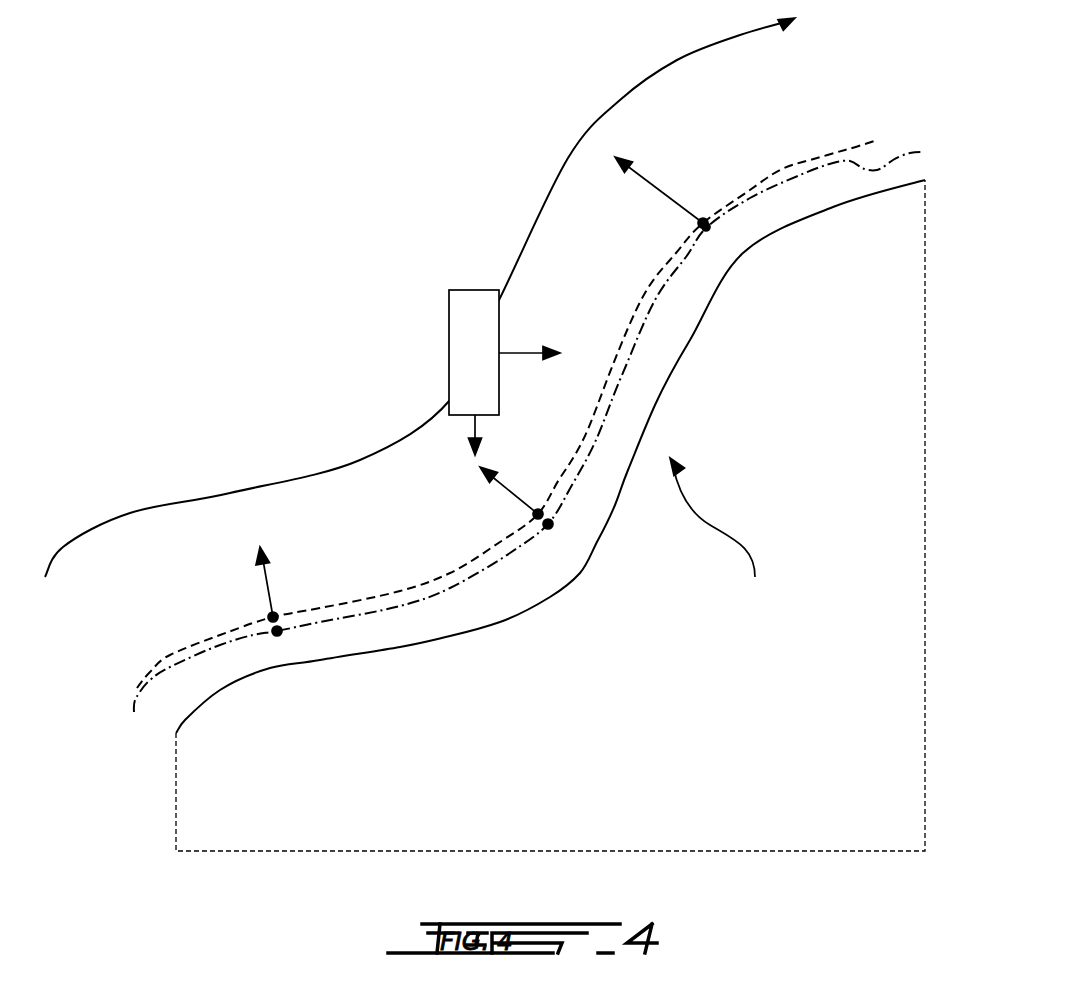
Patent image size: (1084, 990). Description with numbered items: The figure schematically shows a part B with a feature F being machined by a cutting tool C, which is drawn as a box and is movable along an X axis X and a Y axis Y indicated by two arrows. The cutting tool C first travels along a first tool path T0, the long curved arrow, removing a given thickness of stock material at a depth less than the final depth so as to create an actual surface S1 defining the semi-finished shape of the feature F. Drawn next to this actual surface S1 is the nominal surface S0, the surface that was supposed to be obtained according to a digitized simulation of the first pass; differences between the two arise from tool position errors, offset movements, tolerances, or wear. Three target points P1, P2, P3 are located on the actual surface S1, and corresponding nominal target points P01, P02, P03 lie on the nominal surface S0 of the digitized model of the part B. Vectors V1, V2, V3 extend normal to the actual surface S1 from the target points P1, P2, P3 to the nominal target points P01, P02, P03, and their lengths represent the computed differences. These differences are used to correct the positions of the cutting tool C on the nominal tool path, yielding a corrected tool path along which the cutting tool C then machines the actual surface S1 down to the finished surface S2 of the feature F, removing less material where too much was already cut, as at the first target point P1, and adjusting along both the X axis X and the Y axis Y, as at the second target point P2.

The first tool path T0 is at (568, 158).
The nominal surface S0 is at (812, 158).
The actual surface S1 is at (546, 426).
The finished surface S2 is at (857, 203).
The first nominal target point P01 is at (273, 617).
The first target point P1 is at (277, 631).
The first vector V1 is at (268, 580).
The second nominal target point P02 is at (538, 514).
The second target point P2 is at (548, 524).
The second vector V2 is at (505, 492).
The third nominal target point P03 is at (703, 223).
The third target point P3 is at (705, 226).
The third vector V3 is at (660, 187).
The cutting tool C is at (476, 374).
The X axis X is at (520, 353).
The Y axis Y is at (475, 430).
The part B is at (774, 470).
The feature F is at (716, 534).